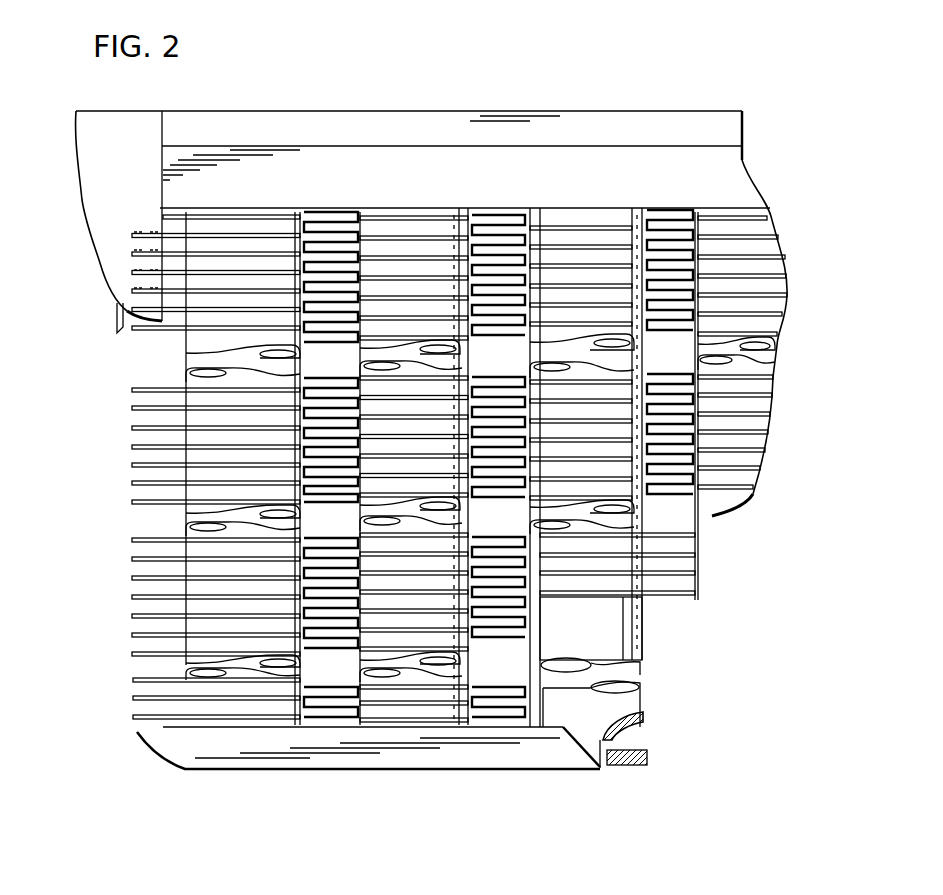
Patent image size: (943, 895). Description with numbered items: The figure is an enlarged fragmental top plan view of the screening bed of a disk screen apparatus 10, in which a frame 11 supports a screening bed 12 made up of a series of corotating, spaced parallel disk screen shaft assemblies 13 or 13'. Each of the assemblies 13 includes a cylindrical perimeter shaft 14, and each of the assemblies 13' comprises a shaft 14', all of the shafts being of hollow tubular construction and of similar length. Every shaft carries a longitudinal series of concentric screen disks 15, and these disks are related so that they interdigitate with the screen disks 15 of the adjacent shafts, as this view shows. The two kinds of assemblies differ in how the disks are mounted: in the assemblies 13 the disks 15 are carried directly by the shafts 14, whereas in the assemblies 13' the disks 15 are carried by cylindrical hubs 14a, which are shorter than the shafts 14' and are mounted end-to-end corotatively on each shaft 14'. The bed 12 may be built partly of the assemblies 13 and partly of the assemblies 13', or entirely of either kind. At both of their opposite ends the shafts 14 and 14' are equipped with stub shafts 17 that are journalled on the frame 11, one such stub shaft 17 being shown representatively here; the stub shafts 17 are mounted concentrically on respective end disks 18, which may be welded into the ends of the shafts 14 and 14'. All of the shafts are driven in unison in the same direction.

The disk screen apparatus 10 is at (622, 84).
The frame 11 is at (742, 128).
The screening bed 12 is at (116, 398).
The disk screen shaft assembly 13 is at (181, 467).
The disk screen shaft assembly 13' is at (758, 406).
The cylindrical perimeter shaft 14 is at (296, 466).
The cylindrical hub 14a is at (707, 325).
The shaft 14' is at (615, 662).
The screen disk 15 is at (773, 396).
The stub shaft 17 is at (645, 744).
The end disk 18 is at (640, 718).